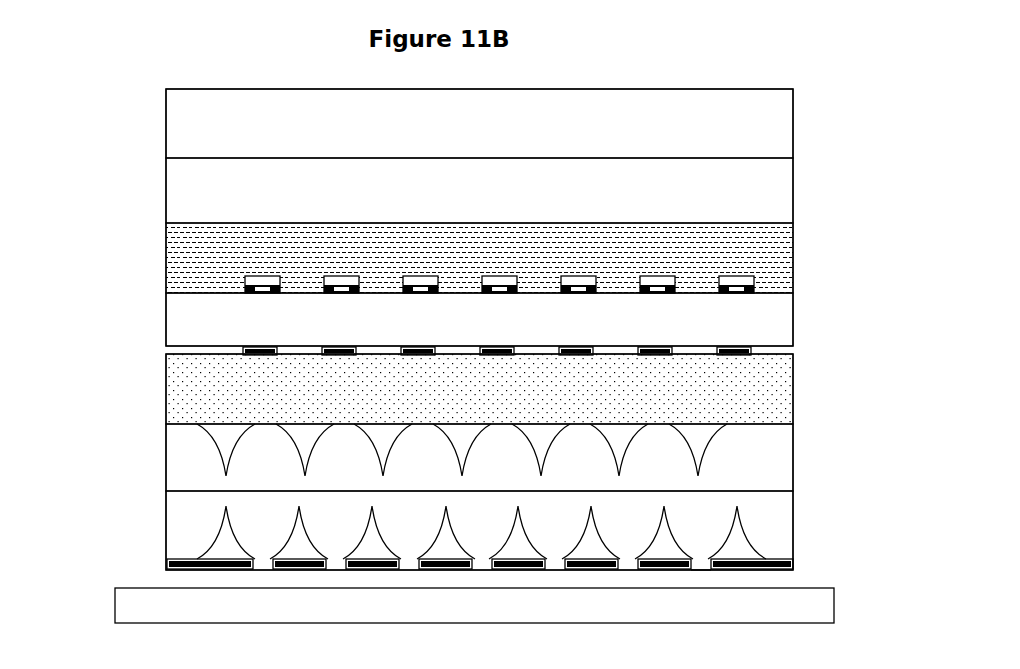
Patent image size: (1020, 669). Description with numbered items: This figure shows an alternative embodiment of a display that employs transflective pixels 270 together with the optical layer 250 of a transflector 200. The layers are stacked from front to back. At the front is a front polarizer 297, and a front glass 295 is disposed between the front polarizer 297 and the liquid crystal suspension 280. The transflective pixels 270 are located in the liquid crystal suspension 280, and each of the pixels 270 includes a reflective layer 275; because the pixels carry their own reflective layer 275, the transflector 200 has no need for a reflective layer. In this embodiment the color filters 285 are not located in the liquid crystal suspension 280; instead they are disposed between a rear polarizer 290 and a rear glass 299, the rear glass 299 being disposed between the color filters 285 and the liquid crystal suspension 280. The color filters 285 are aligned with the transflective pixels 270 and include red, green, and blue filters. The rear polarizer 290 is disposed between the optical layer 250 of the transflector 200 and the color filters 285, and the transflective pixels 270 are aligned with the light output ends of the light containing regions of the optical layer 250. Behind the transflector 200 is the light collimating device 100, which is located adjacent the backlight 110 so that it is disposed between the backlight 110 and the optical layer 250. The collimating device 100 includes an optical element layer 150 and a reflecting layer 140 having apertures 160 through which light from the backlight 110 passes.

The front polarizer 297 is at (166, 145).
The front glass 295 is at (166, 205).
The liquid crystal suspension 280 is at (166, 278).
The transflective pixels 270 is at (756, 280).
The reflective layer 275 is at (760, 294).
The rear glass 299 is at (166, 315).
The color filters 285 is at (753, 355).
The rear polarizer 290 is at (166, 387).
The transflector 200 is at (143, 421).
The optical element layer 250 is at (760, 464).
The light collimating device 100 is at (143, 565).
The optical element layer 150 is at (773, 505).
The reflecting layer 140 is at (793, 567).
The apertures 160 is at (697, 570).
The backlight 110 is at (115, 598).